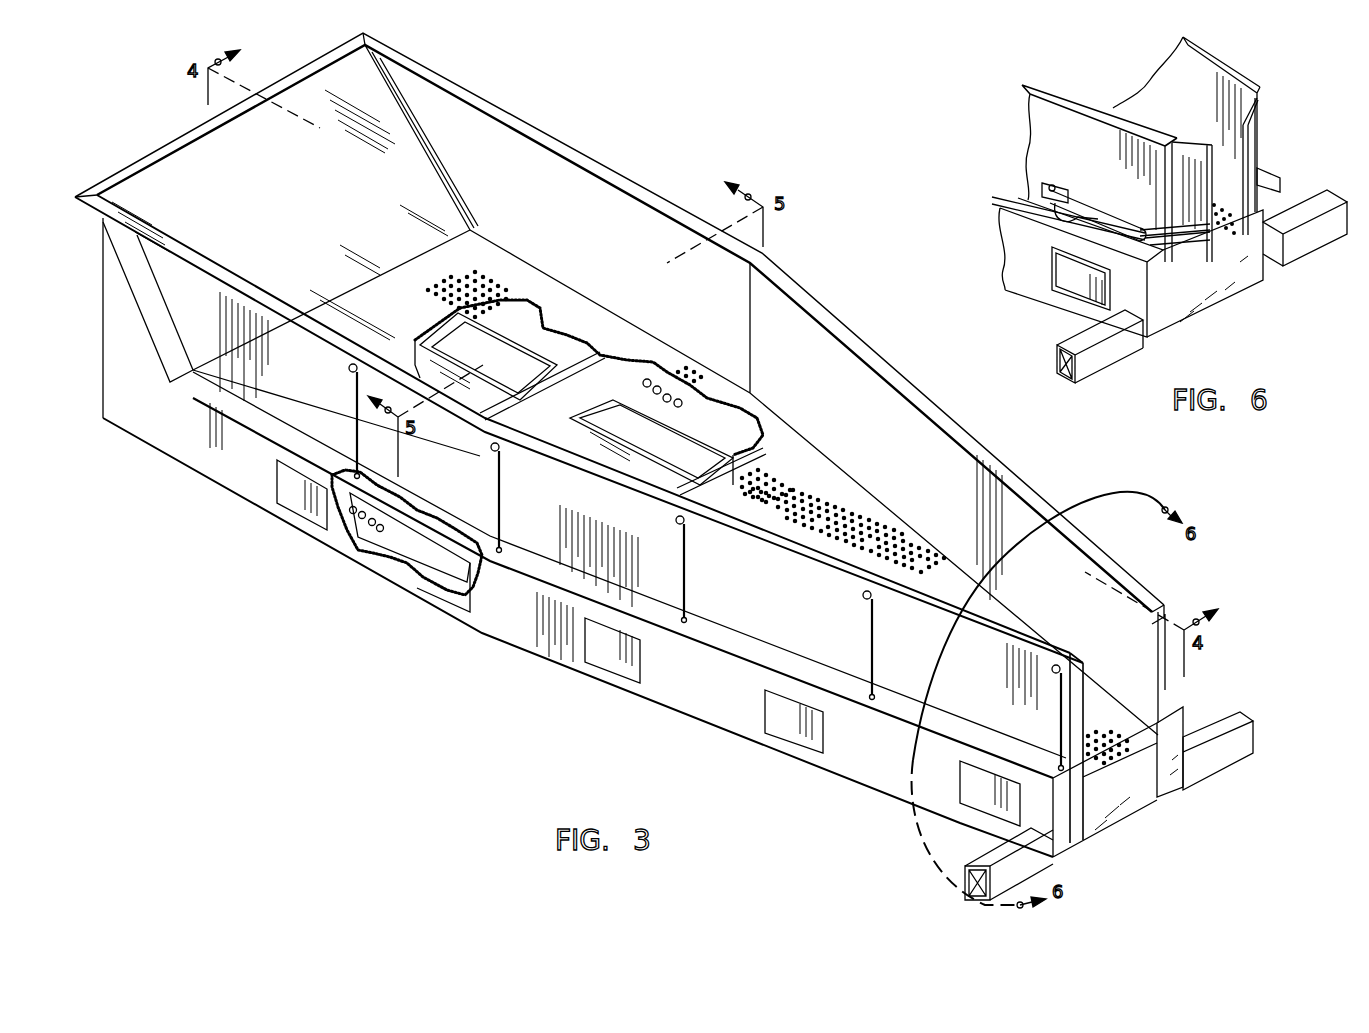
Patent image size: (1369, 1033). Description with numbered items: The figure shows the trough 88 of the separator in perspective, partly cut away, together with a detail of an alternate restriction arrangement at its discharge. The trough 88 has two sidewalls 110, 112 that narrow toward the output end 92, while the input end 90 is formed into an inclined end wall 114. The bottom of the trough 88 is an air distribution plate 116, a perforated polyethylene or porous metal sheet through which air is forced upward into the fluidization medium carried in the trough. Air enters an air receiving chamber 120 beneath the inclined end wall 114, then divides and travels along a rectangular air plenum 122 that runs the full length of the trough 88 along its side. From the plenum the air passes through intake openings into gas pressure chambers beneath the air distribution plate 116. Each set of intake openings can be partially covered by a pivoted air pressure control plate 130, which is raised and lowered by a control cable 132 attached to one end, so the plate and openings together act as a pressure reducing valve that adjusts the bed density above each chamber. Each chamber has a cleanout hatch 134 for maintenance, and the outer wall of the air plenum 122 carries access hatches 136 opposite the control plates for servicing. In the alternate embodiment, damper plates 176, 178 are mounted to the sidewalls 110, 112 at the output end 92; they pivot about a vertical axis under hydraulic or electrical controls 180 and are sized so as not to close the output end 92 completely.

In FIG. 3, the trough 88 is at (612, 133).
In FIG. 3, the input end 90 is at (186, 120).
In FIG. 3, the output end 92 is at (1172, 586).
In FIG. 3, the sidewall 110 is at (300, 382).
In FIG. 6, the sidewall 110 is at (1105, 161).
In FIG. 3, the sidewall 112 is at (605, 262).
In FIG. 6, the sidewall 112 is at (1205, 107).
In FIG. 3, the inclined end wall 114 is at (333, 216).
In FIG. 3, the air distribution plate 116 is at (423, 319).
In FIG. 3, the air receiving chamber 120 is at (123, 332).
In FIG. 3, the air plenum 122 is at (189, 441).
In FIG. 3, the air pressure control plate 130 is at (410, 528).
In FIG. 3, the control cable 132 is at (350, 418).
In FIG. 3, the cleanout hatch 134 is at (495, 372).
In FIG. 3, the access hatch 136 is at (300, 493).
In FIG. 6, the access hatch 136 is at (1078, 280).
In FIG. 6, the damper plate 176 is at (1190, 250).
In FIG. 6, the damper plate 178 is at (1267, 178).
In FIG. 6, the hydraulic or electrical controls 180 is at (1044, 190).